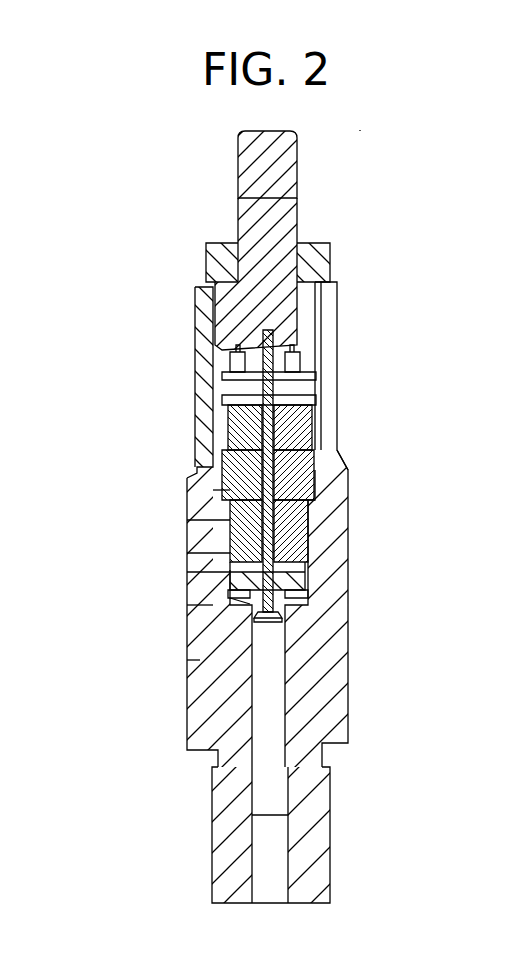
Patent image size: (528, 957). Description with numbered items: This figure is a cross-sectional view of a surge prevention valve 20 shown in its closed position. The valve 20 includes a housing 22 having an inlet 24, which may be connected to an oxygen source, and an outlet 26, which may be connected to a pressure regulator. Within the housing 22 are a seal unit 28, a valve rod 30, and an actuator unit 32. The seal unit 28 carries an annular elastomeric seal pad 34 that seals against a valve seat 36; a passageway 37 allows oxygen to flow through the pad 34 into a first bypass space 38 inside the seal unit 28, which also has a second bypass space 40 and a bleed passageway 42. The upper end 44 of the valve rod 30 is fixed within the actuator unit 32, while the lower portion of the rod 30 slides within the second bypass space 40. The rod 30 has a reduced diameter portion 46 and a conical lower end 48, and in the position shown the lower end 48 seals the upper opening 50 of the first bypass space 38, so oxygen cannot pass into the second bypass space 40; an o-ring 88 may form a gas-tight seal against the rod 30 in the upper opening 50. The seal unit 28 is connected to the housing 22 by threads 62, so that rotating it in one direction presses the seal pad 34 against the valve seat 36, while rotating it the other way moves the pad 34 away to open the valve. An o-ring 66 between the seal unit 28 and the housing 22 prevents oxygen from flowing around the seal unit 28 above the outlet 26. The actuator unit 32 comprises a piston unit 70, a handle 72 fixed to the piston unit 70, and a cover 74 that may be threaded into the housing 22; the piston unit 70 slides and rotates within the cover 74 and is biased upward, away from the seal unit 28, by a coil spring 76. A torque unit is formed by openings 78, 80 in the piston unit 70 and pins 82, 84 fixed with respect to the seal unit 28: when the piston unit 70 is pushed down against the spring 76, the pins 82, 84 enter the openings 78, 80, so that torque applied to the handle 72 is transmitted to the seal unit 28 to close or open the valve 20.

The valve 20 is at (426, 300).
The housing 22 is at (330, 702).
The inlet 24 is at (280, 858).
The outlet 26 is at (187, 557).
The seal unit 28 is at (318, 445).
The valve rod 30 is at (316, 383).
The actuator unit 32 is at (328, 260).
The annular elastomeric seal pad 34 is at (330, 556).
The valve seat 36 is at (316, 606).
The passageway 37 is at (188, 657).
The first bypass space 38 is at (313, 534).
The second bypass space 40 is at (340, 469).
The bleed passageway 42 is at (200, 513).
The upper end 44 is at (318, 300).
The reduced diameter portion 46 is at (232, 477).
The conical lower end 48 is at (188, 624).
The upper opening 50 is at (200, 548).
The threads 62 is at (185, 606).
The o-ring 66 is at (222, 492).
The piston unit 70 is at (298, 224).
The handle 72 is at (287, 152).
The cover 74 is at (216, 268).
The coil spring 76 is at (220, 408).
The opening 78 is at (212, 371).
The opening 80 is at (316, 349).
The pin 82 is at (222, 443).
The pin 84 is at (318, 411).
The o-ring 88 is at (330, 503).